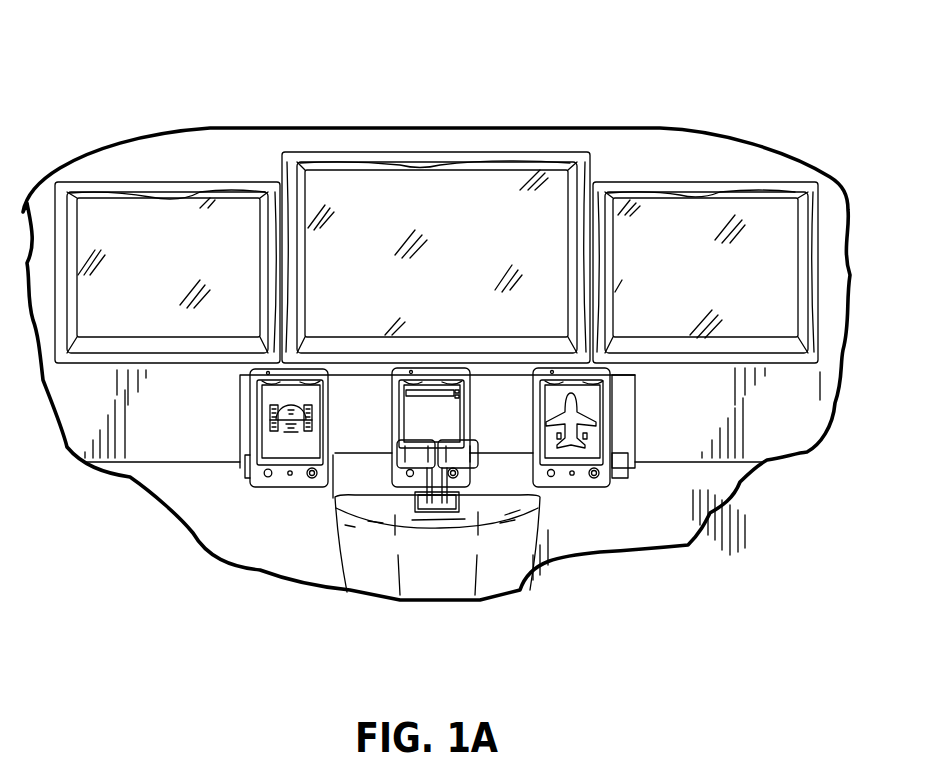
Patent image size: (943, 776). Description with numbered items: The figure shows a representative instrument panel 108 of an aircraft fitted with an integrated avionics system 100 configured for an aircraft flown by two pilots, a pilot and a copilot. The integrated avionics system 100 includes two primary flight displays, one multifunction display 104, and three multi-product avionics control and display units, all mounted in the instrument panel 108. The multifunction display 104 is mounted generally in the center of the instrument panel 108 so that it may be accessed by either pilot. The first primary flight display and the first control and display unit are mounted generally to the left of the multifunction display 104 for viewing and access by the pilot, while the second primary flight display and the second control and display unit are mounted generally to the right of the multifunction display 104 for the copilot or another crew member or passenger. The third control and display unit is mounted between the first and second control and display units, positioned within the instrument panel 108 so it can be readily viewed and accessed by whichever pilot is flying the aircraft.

The integrated avionics system 100 is at (713, 65).
The multifunction display 104 is at (452, 212).
The instrument panel 108 is at (768, 417).